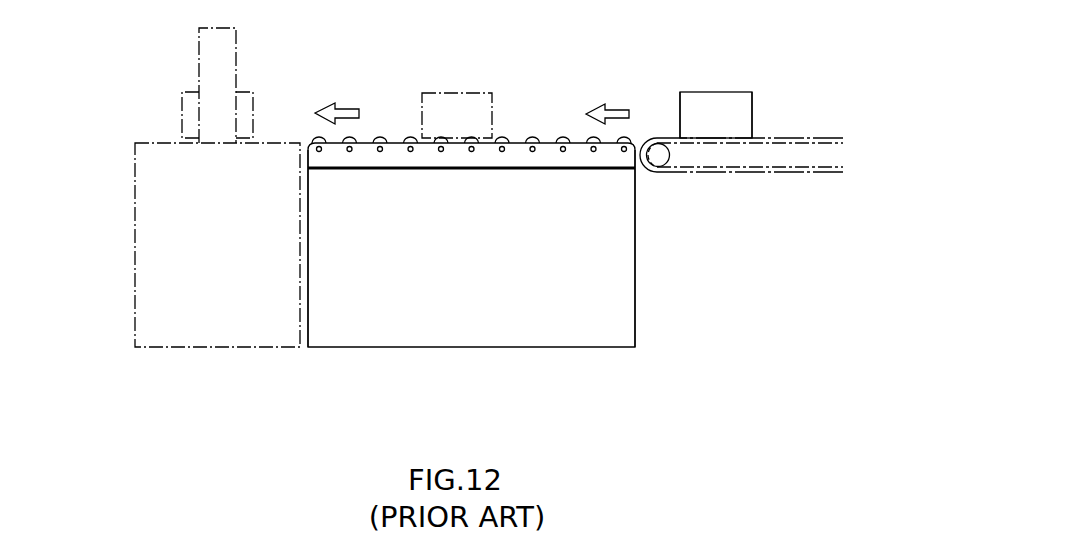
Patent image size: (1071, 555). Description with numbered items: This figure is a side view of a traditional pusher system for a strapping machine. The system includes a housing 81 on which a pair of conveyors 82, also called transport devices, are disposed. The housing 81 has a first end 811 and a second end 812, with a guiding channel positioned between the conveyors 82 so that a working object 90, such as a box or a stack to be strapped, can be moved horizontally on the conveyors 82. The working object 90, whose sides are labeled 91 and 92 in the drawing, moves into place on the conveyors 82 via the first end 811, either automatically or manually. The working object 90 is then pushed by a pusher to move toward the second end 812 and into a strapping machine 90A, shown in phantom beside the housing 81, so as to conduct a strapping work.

The housing 81 is at (446, 343).
The first end 811 is at (635, 297).
The second end 812 is at (308, 277).
The conveyors 82 is at (562, 137).
The working object 90 is at (718, 80).
The workpiece first side 91 is at (680, 117).
The workpiece second side 92 is at (752, 117).
The strapping machine 90A is at (135, 303).